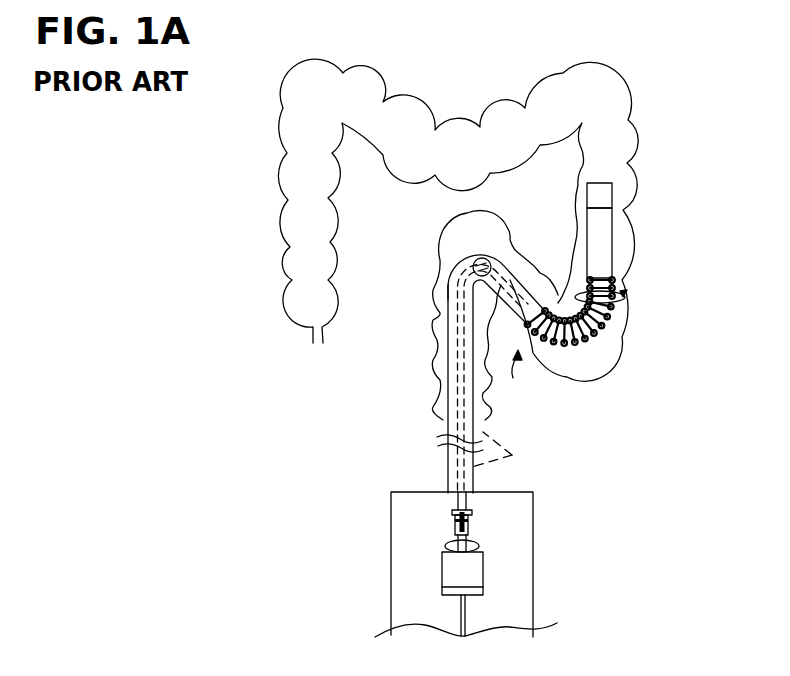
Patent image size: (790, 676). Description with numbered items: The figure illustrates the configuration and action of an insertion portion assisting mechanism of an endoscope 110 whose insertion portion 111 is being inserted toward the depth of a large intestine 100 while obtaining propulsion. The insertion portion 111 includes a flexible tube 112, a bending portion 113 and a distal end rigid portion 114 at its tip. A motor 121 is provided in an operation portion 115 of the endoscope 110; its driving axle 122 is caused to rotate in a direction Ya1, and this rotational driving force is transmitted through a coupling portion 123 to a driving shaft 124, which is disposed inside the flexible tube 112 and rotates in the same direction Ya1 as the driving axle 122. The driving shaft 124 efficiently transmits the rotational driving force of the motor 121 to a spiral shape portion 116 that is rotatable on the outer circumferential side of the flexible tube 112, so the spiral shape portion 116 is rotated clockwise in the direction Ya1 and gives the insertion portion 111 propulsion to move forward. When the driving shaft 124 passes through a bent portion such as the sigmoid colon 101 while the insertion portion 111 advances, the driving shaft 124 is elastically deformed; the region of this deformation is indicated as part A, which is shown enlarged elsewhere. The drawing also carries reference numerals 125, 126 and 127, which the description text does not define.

The large intestine 100 is at (490, 127).
The sigmoid colon 101 is at (515, 385).
The endoscope 110 is at (536, 492).
The insertion portion 111 is at (480, 417).
The flexible tube 112 is at (447, 290).
The bending portion 113 is at (612, 253).
The distal end rigid portion 114 is at (612, 196).
The operation portion 115 is at (538, 603).
The spiral shape portion 116 is at (593, 341).
The motor 121 is at (473, 573).
The driving axle 122 is at (471, 541).
The coupling portion 123 is at (482, 523).
The driving shaft 124 is at (463, 508).
The connecting shaft 125 is at (451, 524).
The channel 126 is at (540, 282).
The observation window 127 is at (543, 306).
The part A is at (508, 262).
The direction Ya1 is at (617, 298).